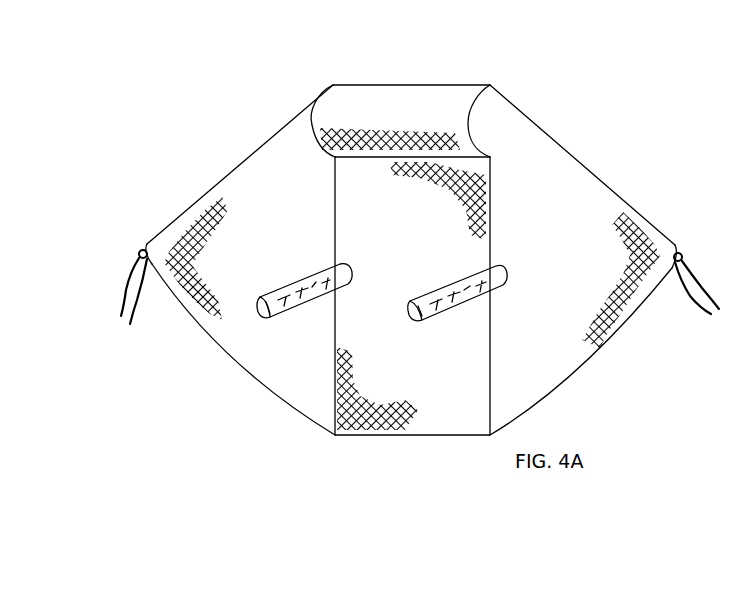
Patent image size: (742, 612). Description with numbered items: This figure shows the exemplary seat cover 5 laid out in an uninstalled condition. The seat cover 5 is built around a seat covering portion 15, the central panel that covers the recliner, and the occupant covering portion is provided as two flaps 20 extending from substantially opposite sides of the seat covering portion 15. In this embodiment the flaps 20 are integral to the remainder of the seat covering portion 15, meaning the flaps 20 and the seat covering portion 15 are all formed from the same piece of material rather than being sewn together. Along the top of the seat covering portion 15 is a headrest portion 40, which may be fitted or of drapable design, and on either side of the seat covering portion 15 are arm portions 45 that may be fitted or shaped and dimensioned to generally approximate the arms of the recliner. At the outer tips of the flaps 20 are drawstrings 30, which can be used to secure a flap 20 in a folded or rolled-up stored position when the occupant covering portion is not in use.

The seat cover 5 is at (241, 93).
The flaps 20 is at (274, 153).
The seat covering portion 15 is at (463, 429).
The headrest portion 40 is at (383, 106).
The arm portions 45 is at (289, 294).
The drawstring 30 is at (129, 289).